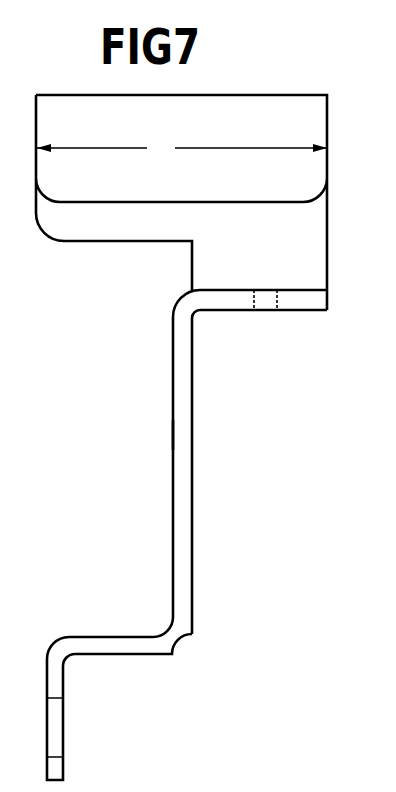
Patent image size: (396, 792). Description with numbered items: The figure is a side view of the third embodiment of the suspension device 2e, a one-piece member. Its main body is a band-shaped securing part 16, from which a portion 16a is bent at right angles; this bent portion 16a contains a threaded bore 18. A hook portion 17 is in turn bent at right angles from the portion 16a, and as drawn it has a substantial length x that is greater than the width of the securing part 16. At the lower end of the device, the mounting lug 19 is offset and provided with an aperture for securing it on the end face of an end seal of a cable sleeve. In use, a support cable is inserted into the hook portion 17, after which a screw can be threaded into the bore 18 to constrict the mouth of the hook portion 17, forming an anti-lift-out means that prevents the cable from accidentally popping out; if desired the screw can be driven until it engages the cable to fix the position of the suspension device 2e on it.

The hook portion 17 is at (315, 133).
The bent portion of securing part 16a is at (300, 300).
The threaded bore 18 is at (266, 300).
The band-shaped securing part 16 is at (188, 511).
The suspension device 2e is at (160, 432).
The mounting lug 19 is at (57, 682).